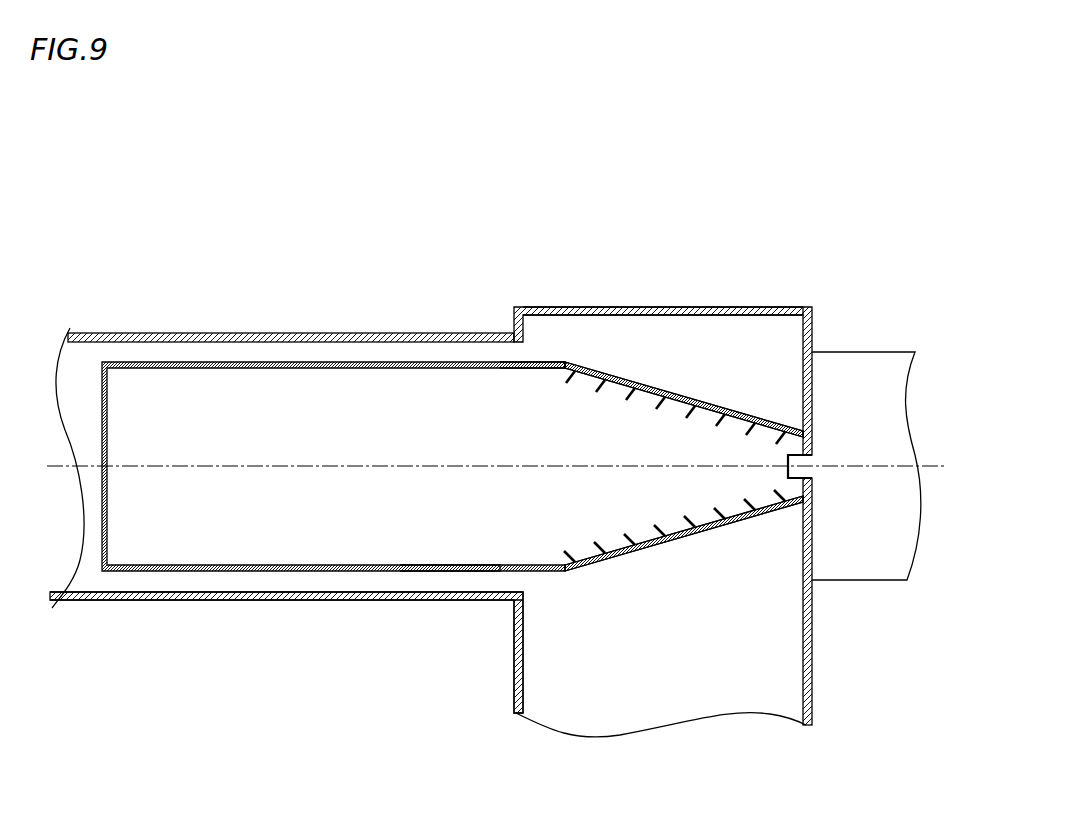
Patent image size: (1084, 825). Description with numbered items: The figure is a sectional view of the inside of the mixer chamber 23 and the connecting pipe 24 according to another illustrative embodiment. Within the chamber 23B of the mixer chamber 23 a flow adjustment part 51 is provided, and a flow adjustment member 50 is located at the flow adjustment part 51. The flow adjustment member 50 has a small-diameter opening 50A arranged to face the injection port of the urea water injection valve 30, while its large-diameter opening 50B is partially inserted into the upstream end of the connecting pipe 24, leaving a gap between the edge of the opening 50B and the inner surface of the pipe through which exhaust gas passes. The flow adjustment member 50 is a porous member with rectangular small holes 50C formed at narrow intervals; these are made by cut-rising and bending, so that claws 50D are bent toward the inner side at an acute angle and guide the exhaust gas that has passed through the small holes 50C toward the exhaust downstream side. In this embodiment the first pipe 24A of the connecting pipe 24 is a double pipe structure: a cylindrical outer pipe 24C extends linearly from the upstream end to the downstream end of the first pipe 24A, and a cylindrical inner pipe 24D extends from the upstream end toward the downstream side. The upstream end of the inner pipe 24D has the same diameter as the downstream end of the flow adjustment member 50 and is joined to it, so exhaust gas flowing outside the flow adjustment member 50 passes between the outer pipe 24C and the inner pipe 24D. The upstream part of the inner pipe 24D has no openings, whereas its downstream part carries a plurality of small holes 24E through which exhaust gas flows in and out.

The mixer chamber 23 is at (777, 307).
The chamber 23B is at (735, 307).
The connecting pipe 24 is at (510, 655).
The first pipe 24A is at (518, 656).
The outer pipe 24C is at (487, 600).
The inner pipe 24D is at (447, 571).
The small holes 24E is at (333, 572).
The urea water injection valve 30 is at (795, 455).
The flow adjustment member 50 is at (792, 437).
The small-diameter opening 50A is at (812, 482).
The large-diameter opening 50B is at (566, 372).
The small holes 50C is at (612, 378).
The claws 50D is at (660, 390).
The flow adjustment part 51 is at (533, 350).